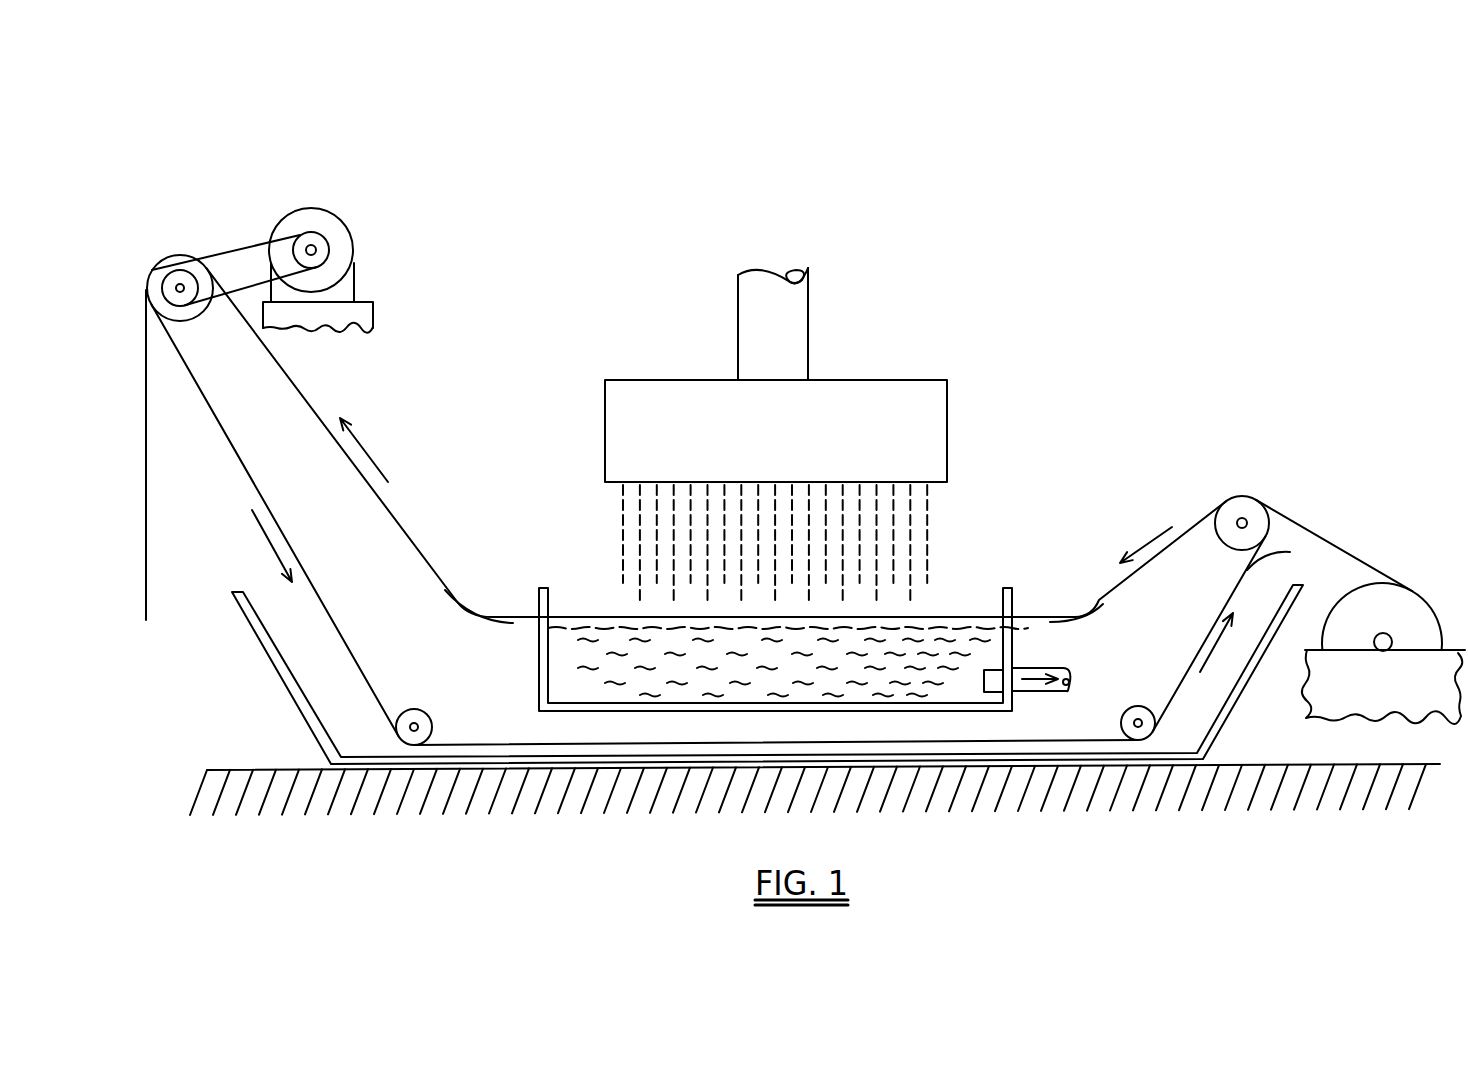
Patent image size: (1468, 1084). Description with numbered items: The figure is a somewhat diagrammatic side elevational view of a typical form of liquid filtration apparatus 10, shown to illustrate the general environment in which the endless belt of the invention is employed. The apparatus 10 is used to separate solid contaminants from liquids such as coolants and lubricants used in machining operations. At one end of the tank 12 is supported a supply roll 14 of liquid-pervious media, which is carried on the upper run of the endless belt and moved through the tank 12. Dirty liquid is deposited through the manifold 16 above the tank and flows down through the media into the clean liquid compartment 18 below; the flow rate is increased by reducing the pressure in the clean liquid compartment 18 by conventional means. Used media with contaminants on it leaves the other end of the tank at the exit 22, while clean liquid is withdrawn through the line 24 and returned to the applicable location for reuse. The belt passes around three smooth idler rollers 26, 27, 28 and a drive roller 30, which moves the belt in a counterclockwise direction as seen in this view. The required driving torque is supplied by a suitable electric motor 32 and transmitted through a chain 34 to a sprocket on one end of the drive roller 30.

The filtration apparatus 10 is at (1133, 459).
The tank 12 is at (1233, 713).
The supply roll 14 is at (1423, 615).
The manifold 16 is at (865, 395).
The clean liquid compartment 18 is at (954, 632).
The media exit 22 is at (146, 567).
The line 24 is at (1022, 670).
The idler roller 26 is at (1243, 508).
The idler roller 27 is at (1120, 717).
The idler roller 28 is at (418, 708).
The drive roller 30 is at (173, 272).
The electric motor 32 is at (335, 225).
The chain 34 is at (227, 253).